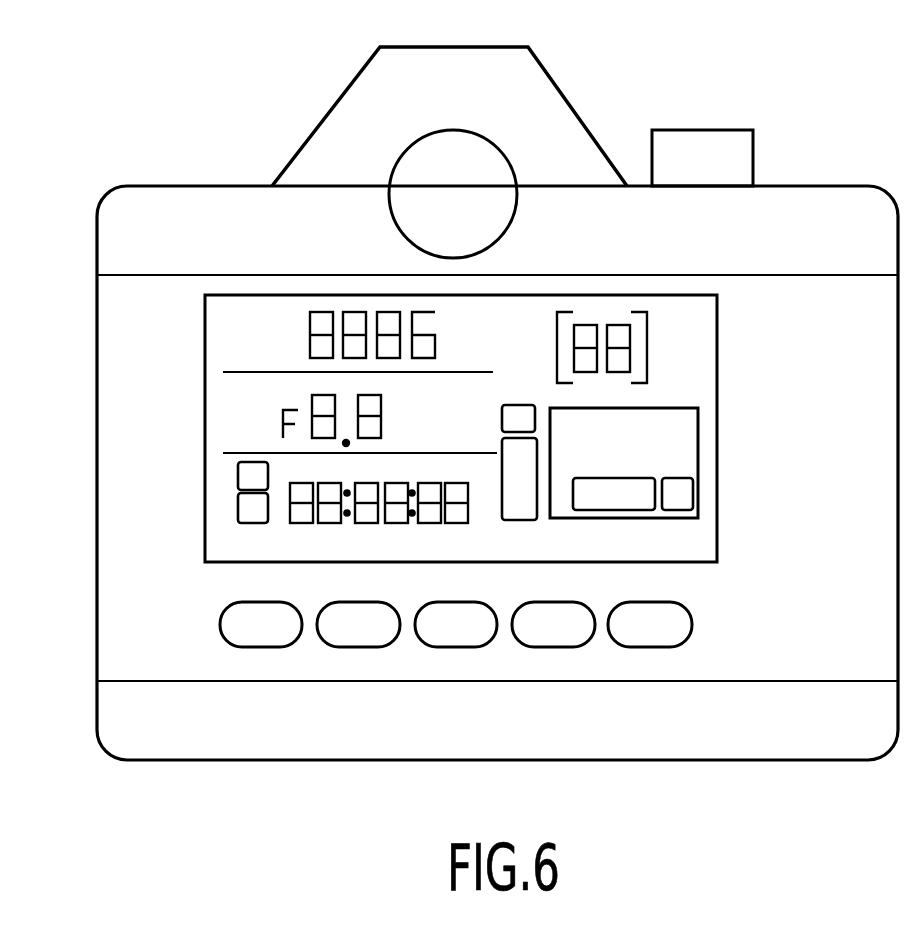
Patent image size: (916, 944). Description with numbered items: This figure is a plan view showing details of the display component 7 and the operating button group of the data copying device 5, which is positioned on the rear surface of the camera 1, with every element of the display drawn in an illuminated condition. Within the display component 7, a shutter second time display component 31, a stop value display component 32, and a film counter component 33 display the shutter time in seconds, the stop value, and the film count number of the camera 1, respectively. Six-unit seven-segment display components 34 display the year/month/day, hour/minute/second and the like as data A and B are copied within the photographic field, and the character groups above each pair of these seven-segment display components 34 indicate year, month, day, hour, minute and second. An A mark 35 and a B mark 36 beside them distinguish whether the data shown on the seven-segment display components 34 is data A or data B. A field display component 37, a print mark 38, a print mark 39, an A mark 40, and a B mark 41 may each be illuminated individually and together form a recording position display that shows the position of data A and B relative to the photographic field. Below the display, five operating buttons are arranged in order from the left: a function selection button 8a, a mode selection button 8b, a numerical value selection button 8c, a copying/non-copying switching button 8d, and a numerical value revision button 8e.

The camera 1 is at (805, 196).
The data copying device 5 is at (778, 665).
The display component 7 is at (248, 288).
The function selection button 8a is at (260, 648).
The mode selection button 8b is at (360, 648).
The numerical value selection button 8c is at (458, 648).
The copying/non-copying switching button 8d is at (550, 648).
The numerical value revision button 8e is at (655, 648).
The shutter second time display component 31 is at (288, 318).
The stop value display component 32 is at (288, 408).
The film counter component 33 is at (655, 348).
The seven-segment display components 34 is at (302, 534).
The A mark 35 is at (237, 476).
The B mark 36 is at (237, 513).
The field display component 37 is at (698, 433).
The print mark 38 is at (627, 512).
The print mark 39 is at (524, 521).
The A mark 40 is at (694, 494).
The B mark 41 is at (516, 405).